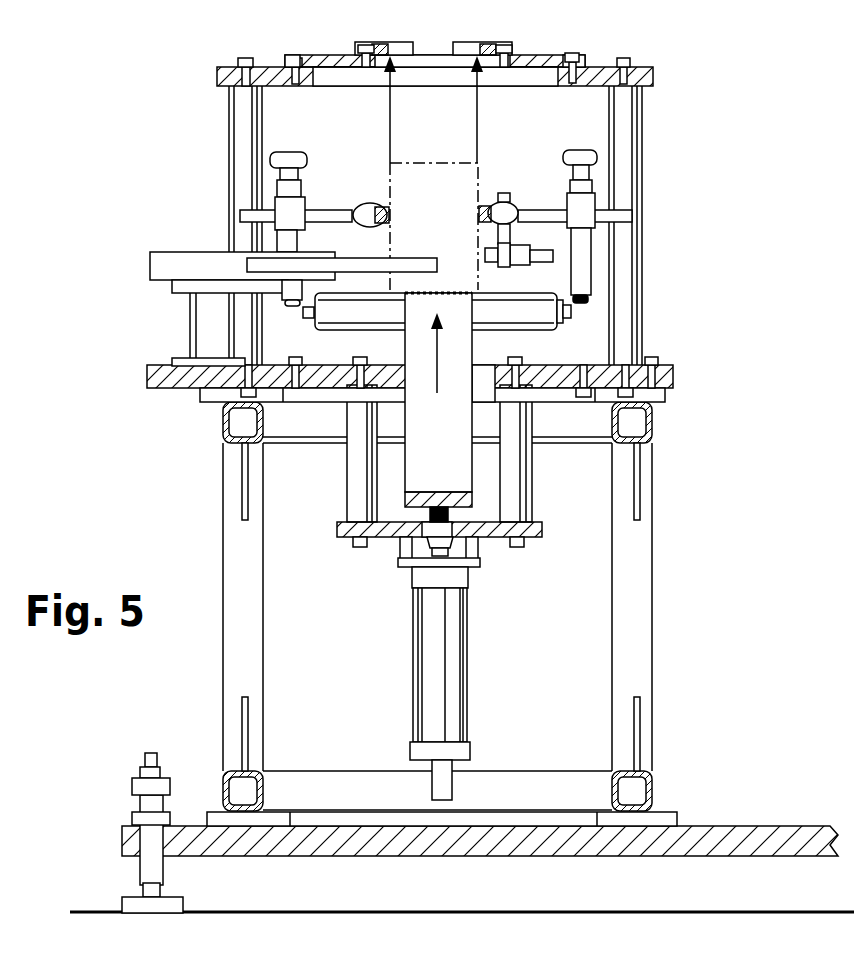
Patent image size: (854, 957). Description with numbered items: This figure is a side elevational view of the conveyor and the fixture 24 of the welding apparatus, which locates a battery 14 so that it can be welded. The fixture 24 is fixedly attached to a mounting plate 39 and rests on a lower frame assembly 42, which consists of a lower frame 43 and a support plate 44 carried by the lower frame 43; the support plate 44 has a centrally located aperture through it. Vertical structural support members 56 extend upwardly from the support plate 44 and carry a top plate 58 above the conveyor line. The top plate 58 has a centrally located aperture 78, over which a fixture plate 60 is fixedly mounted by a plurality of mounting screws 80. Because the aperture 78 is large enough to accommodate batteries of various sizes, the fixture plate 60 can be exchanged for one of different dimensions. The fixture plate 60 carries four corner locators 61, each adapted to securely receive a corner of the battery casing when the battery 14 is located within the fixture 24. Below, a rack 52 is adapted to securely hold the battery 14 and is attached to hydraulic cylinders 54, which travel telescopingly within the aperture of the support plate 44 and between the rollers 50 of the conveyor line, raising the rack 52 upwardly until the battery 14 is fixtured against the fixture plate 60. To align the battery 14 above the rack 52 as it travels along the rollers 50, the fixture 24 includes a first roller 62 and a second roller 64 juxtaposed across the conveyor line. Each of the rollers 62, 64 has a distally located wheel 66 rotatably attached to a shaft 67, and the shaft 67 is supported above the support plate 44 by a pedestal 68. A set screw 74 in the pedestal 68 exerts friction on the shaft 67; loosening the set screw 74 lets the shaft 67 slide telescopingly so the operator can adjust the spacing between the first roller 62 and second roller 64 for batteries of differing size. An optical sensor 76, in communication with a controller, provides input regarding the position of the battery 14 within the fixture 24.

The battery 14 is at (390, 180).
The fixture 24 is at (716, 203).
The mounting plate 39 is at (462, 833).
The lower frame assembly 42 is at (506, 614).
The lower frame 43 is at (640, 610).
The support plate 44 is at (673, 372).
The rollers 50 is at (348, 316).
The rack 52 is at (472, 337).
The hydraulic cylinders 54 is at (494, 648).
The vertical structural support members 56 is at (645, 188).
The top plate 58 is at (657, 77).
The fixture plate 60 is at (538, 55).
The corner locators 61 is at (403, 42).
The first roller 62 is at (604, 241).
The second roller 64 is at (258, 232).
The wheel 66 is at (490, 200).
The shaft 67 is at (548, 200).
The pedestal 68 is at (601, 252).
The set screw 74 is at (598, 155).
The optical sensor 76 is at (535, 262).
The aperture 78 is at (436, 40).
The mounting screws 80 is at (573, 53).